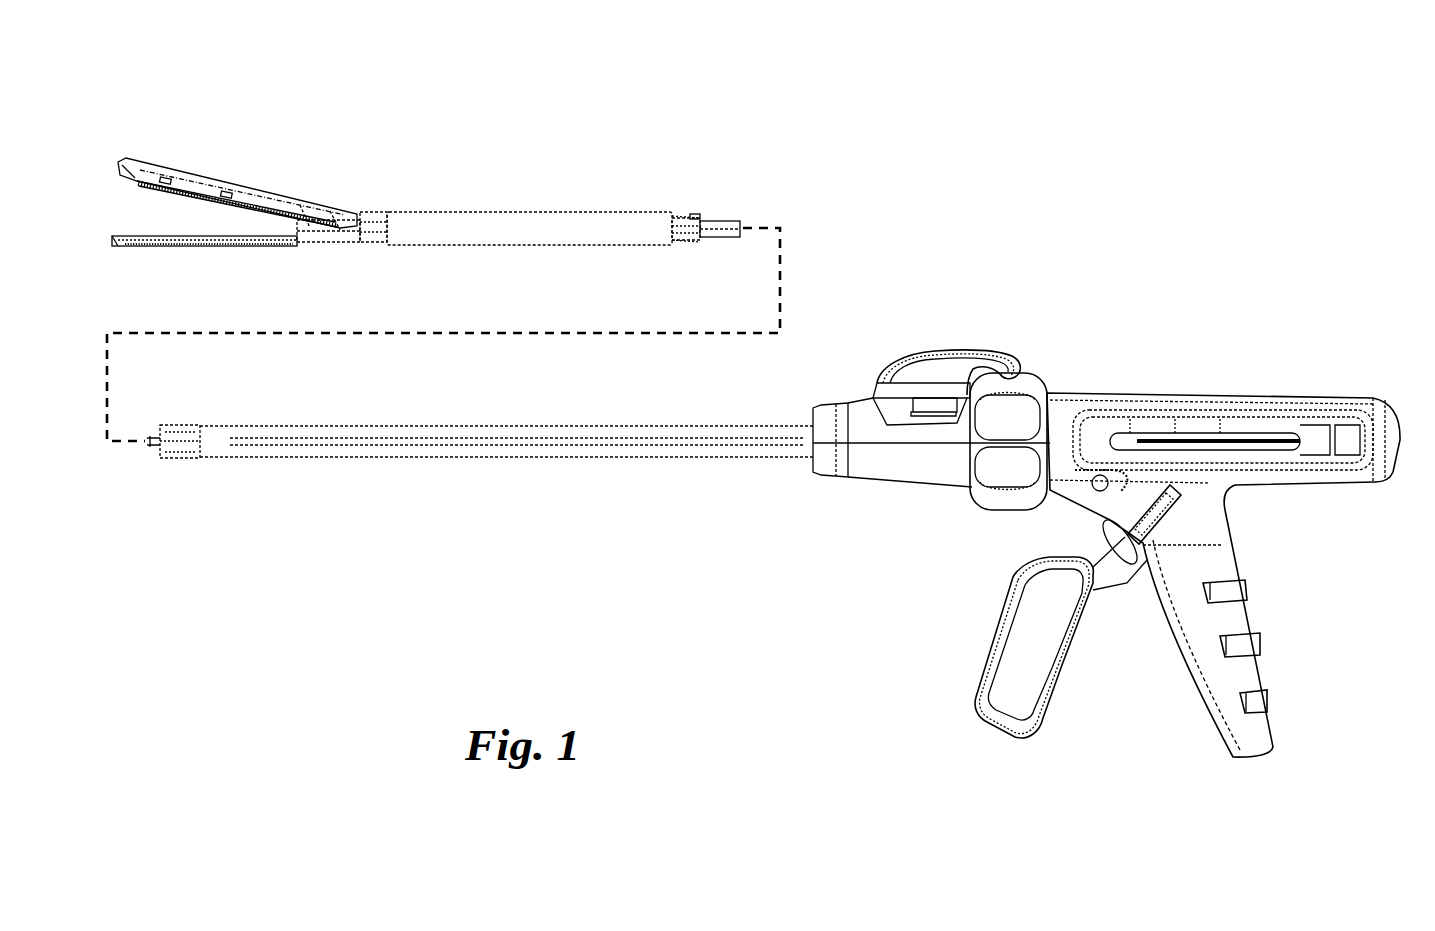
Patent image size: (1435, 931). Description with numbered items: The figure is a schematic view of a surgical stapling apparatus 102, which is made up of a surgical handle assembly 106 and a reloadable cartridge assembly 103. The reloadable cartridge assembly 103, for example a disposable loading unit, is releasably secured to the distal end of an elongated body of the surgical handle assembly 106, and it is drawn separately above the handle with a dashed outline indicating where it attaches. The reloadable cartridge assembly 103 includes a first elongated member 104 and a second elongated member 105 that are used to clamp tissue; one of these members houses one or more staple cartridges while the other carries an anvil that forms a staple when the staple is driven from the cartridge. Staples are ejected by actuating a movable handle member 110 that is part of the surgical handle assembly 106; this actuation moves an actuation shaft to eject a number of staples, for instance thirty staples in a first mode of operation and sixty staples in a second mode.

The surgical stapling apparatus 102 is at (788, 428).
The reloadable cartridge assembly 103 is at (551, 215).
The first elongated member 104 is at (238, 196).
The second elongated member 105 is at (190, 250).
The surgical handle assembly 106 is at (1394, 428).
The movable handle member 110 is at (993, 641).